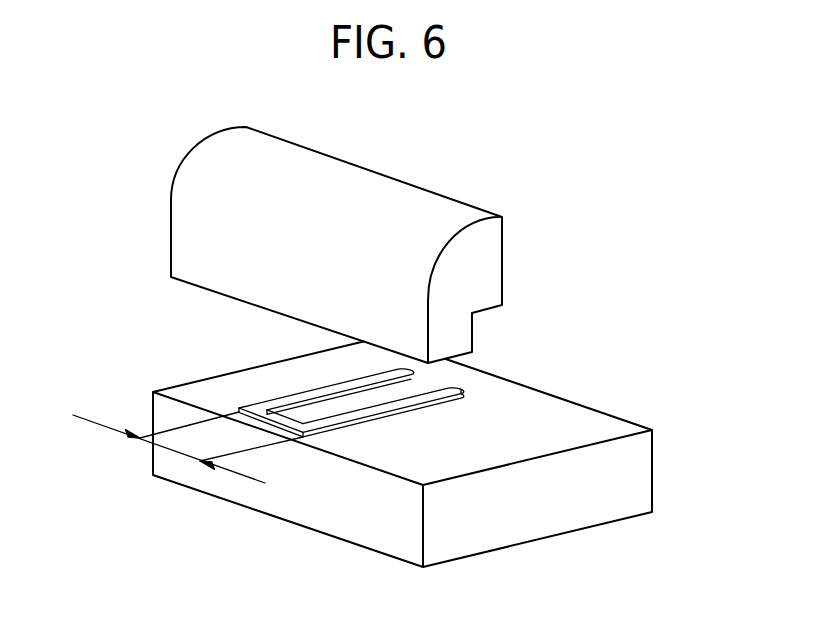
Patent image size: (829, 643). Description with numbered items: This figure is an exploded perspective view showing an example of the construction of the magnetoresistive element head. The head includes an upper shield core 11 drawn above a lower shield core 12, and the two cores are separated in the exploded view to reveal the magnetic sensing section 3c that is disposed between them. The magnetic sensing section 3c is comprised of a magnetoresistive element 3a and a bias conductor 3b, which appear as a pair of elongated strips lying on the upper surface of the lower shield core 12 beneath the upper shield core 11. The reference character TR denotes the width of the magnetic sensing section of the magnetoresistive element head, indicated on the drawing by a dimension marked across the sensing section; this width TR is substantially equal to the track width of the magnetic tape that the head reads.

The upper shield core 11 is at (395, 179).
The lower shield core 12 is at (530, 525).
The magnetoresistive element 3a is at (426, 346).
The bias conductor 3b is at (467, 392).
The magnetic sensing section 3c is at (452, 357).
The width of the magnetic sensing section TR is at (167, 447).